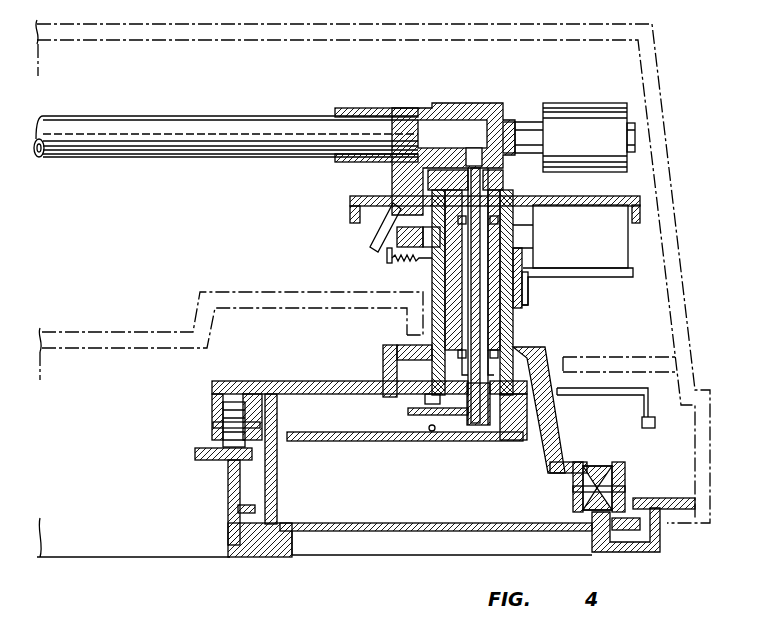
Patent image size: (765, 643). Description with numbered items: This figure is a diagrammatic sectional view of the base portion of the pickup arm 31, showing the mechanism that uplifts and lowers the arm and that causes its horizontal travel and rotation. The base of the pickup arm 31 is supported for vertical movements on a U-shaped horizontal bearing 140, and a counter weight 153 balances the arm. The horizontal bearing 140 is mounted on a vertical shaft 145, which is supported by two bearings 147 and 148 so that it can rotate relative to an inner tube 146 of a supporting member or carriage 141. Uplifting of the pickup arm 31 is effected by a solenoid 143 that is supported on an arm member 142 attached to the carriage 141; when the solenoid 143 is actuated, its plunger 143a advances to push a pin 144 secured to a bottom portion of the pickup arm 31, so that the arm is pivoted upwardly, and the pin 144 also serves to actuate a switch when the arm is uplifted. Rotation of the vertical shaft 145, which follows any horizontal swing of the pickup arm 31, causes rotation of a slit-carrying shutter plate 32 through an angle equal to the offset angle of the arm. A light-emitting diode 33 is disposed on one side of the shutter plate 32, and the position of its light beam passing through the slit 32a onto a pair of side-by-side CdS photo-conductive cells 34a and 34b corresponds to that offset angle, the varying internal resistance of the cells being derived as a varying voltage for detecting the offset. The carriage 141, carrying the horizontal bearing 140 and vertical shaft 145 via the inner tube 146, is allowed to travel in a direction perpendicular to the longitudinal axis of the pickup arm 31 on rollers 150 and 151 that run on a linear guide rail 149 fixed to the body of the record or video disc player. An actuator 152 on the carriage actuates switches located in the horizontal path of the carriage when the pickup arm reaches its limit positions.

The pickup arm 31 is at (138, 142).
The slit-carrying shutter plate 32 is at (467, 433).
The slit 32a is at (410, 443).
The light-emitting diode 33 is at (434, 432).
The CdS photo-conductive cell 34a is at (370, 410).
The CdS photo-conductive cell 34b is at (425, 396).
The horizontal bearing 140 is at (503, 180).
The carriage 141 is at (557, 348).
The arm member 142 is at (528, 290).
The solenoid 143 is at (613, 245).
The plunger 143a is at (398, 241).
The pin 144 is at (380, 248).
The vertical shaft 145 is at (468, 315).
The inner tube 146 is at (452, 340).
The bearing 147 is at (512, 222).
The bearing 148 is at (514, 345).
The linear guide rail 149 is at (432, 531).
The roller 150 is at (233, 412).
The roller 151 is at (598, 462).
The actuator 152 is at (642, 422).
The counter weight 153 is at (581, 125).